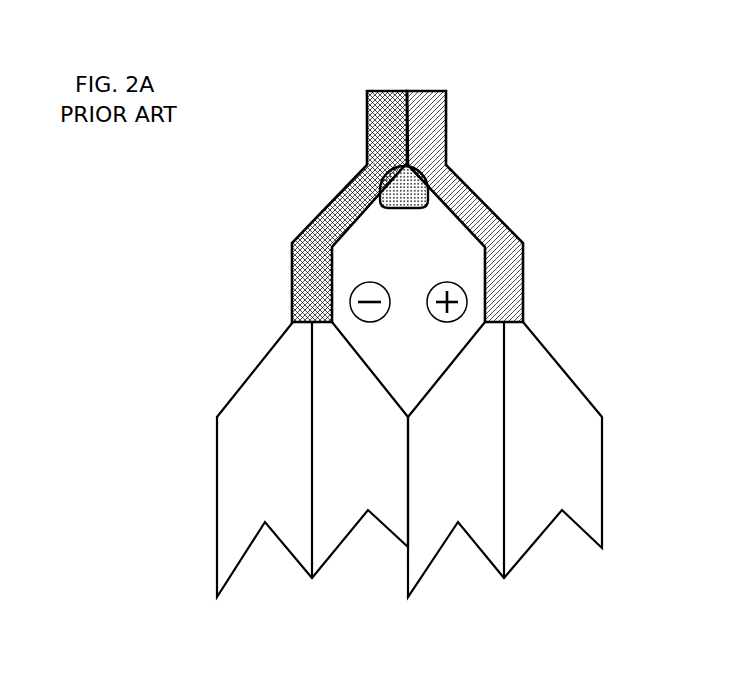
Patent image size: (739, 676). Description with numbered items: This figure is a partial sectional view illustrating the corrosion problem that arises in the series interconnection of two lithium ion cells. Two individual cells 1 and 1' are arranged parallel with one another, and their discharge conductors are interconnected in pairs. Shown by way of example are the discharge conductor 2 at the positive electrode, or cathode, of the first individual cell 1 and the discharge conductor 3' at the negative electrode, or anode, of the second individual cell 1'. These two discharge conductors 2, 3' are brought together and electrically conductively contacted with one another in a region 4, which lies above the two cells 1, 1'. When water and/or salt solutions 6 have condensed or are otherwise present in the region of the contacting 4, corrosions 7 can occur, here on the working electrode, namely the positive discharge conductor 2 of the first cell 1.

The first individual cell 1 is at (506, 449).
The second individual cell 1' is at (307, 448).
The discharge conductor at the positive electrode 2 is at (442, 88).
The discharge conductor at the negative electrode 3' is at (349, 173).
The contacting region 4 is at (365, 108).
The water and/or salt solution 6 is at (440, 195).
The corrosion 7 is at (447, 157).